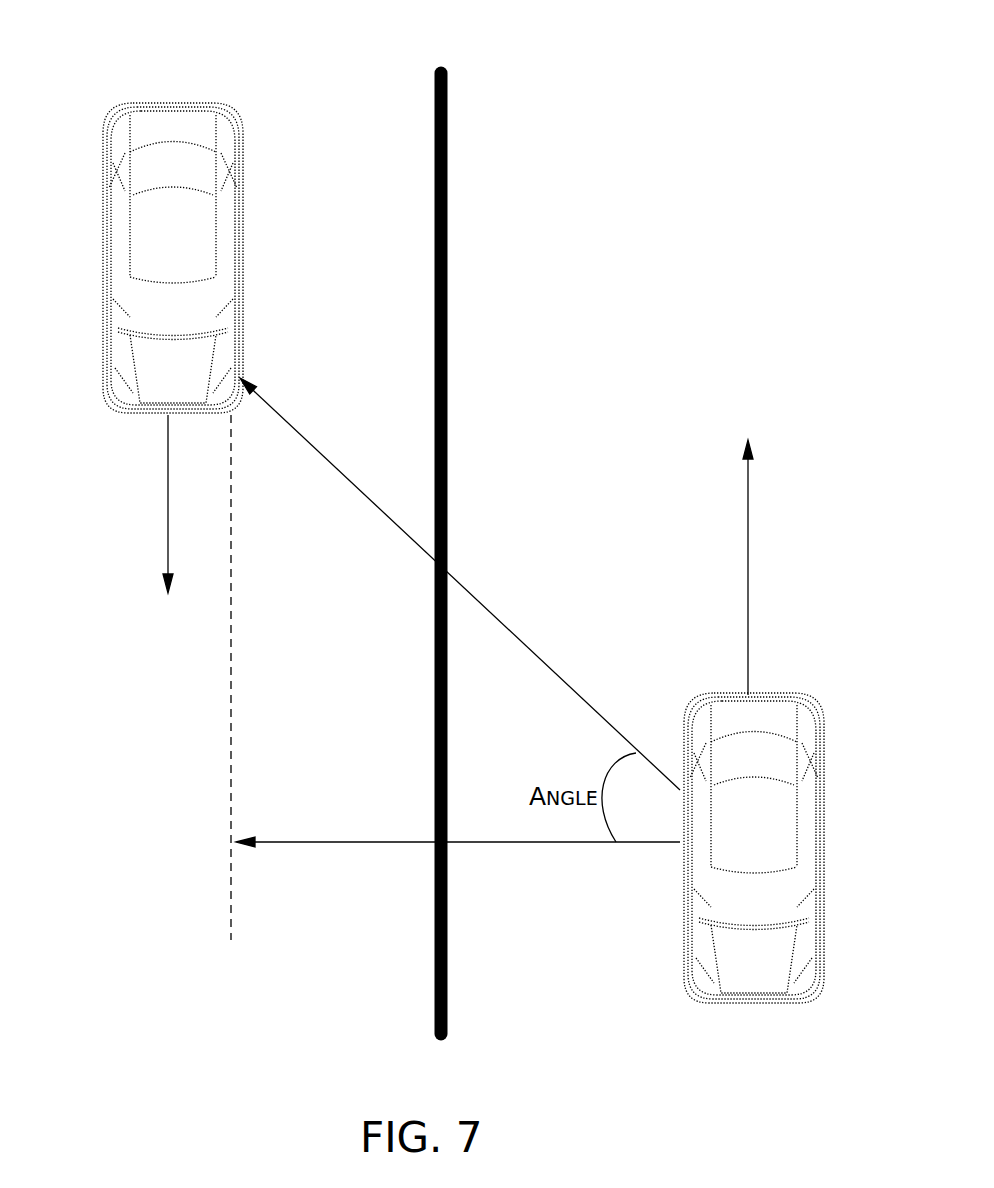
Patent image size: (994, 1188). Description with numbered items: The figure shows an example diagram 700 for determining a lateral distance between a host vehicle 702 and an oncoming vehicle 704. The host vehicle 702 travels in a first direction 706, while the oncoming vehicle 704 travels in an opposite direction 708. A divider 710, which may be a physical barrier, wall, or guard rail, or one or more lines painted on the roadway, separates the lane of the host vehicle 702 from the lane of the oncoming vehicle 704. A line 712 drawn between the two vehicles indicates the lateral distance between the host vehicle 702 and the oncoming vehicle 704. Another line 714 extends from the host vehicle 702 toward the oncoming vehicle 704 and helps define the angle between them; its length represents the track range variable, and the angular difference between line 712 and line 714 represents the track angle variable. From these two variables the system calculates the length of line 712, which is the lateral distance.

The diagram 700 is at (773, 45).
The host vehicle 702 is at (803, 705).
The oncoming vehicle 704 is at (153, 108).
The first direction 706 is at (748, 500).
The opposite direction 708 is at (165, 535).
The divider 710 is at (433, 141).
The line 712 is at (385, 848).
The line 714 is at (370, 500).